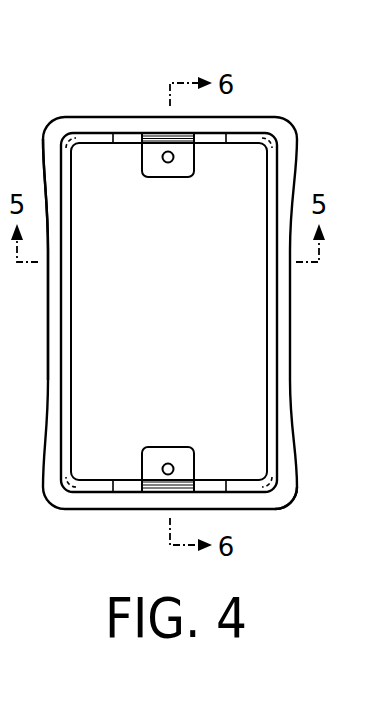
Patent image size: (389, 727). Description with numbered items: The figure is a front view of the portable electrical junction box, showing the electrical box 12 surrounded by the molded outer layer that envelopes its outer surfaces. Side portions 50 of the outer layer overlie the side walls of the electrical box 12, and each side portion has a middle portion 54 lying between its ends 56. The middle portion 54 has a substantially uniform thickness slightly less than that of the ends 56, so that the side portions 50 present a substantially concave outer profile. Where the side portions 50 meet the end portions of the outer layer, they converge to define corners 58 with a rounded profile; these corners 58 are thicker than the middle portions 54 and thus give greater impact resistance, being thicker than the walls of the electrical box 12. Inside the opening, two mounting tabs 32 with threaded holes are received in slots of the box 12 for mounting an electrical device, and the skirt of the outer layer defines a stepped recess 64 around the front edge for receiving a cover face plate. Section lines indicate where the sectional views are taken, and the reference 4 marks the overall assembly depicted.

The fixture 4 is at (34, 360).
The electrical box 12 is at (84, 349).
The mounting tab 32 is at (164, 178).
The side portions 50 is at (300, 403).
The middle portion 54 is at (291, 344).
The ends 56 is at (297, 466).
The corners 58 is at (58, 122).
The recess 64 is at (267, 262).